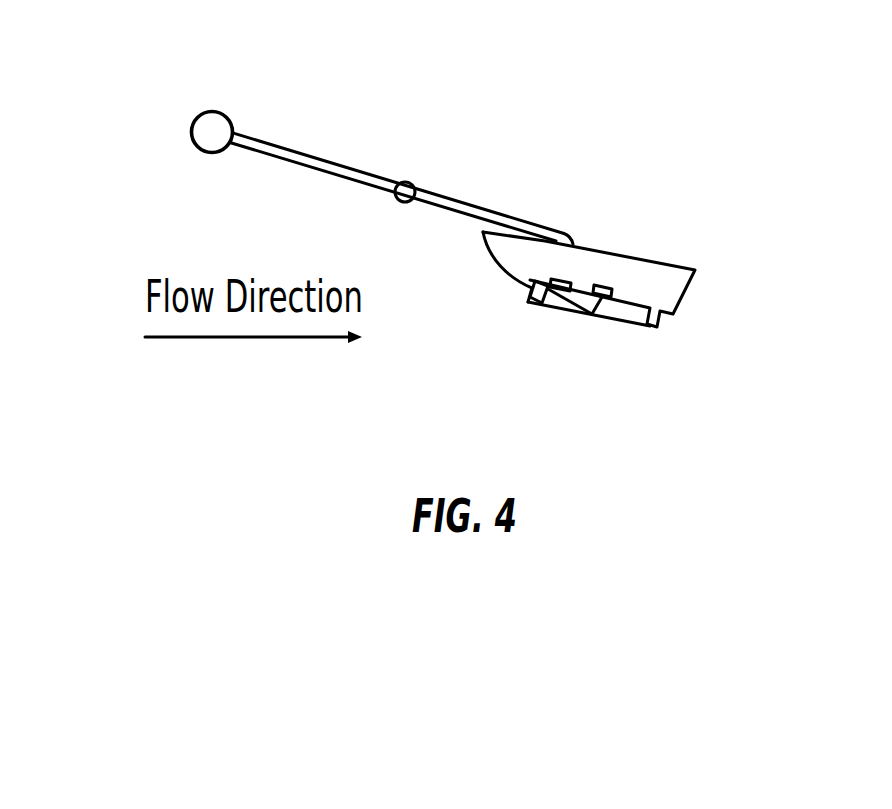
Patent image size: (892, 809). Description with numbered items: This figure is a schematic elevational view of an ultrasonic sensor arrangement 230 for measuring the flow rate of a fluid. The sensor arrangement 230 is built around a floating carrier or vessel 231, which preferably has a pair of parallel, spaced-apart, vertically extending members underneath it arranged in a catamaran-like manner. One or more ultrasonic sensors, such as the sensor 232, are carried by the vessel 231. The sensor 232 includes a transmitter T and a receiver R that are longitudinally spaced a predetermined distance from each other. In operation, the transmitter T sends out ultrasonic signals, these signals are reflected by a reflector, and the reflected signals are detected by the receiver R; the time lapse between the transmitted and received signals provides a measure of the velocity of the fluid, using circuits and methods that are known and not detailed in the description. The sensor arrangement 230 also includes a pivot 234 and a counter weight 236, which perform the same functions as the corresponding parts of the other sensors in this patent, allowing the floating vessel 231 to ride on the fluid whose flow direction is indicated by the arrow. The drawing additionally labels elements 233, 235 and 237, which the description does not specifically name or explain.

The ultrasonic sensor arrangement 230 is at (518, 37).
The floating carrier or vessel 231 is at (463, 275).
The ultrasonic sensor 232 is at (550, 370).
The connecting wires 233 is at (533, 322).
The pivot 234 is at (356, 222).
The arm / support plate 235 is at (484, 246).
The counter weight 236 is at (165, 158).
The contact point 237 is at (656, 408).
The transmitter T is at (589, 253).
The receiver R is at (579, 270).